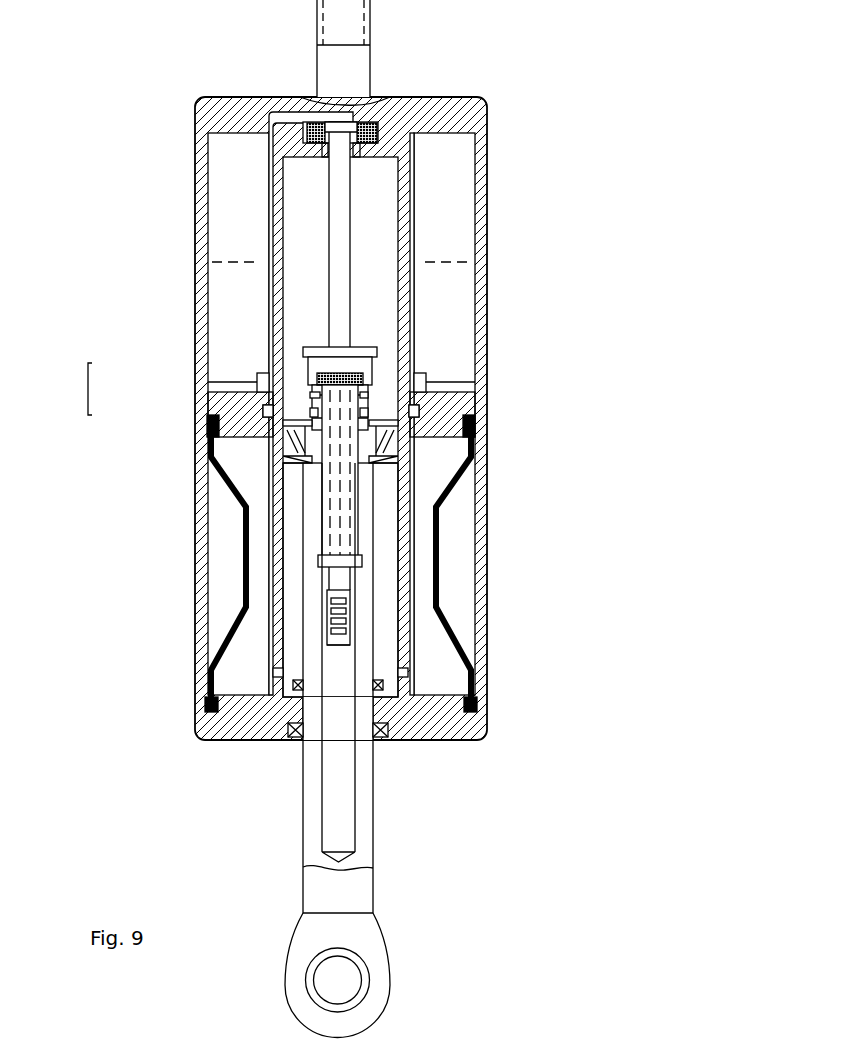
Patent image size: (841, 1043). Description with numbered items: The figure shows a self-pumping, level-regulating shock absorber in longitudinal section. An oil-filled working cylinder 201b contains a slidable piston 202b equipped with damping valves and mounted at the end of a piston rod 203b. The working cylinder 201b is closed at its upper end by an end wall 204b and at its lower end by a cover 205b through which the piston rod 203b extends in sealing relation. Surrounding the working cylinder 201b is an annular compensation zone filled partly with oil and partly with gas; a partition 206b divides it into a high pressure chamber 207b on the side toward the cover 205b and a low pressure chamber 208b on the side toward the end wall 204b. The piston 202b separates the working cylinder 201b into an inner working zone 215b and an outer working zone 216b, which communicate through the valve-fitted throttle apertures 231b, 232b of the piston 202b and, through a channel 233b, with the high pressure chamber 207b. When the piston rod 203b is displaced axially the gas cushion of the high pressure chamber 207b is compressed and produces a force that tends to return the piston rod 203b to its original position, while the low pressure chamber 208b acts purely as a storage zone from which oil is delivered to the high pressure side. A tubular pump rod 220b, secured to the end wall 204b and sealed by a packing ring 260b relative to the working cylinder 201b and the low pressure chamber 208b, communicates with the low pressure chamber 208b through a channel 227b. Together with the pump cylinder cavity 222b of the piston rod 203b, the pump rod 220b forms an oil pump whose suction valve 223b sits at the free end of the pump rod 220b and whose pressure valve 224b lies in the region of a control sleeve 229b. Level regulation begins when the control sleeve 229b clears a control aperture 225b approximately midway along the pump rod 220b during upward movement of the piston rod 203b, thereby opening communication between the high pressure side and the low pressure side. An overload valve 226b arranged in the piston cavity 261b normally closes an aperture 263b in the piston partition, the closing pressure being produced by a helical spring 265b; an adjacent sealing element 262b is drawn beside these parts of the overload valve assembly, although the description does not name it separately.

The working cylinder 201b is at (268, 342).
The piston 202b is at (298, 462).
The piston rod 203b is at (312, 800).
The end wall 204b is at (430, 112).
The cover 205b is at (413, 737).
The partition 206b is at (438, 417).
The high pressure chamber 207b is at (258, 618).
The low pressure chamber 208b is at (228, 290).
The inner working zone 215b is at (372, 243).
The outer working zone 216b is at (384, 525).
The pump rod 220b is at (350, 285).
The pump cylinder cavity 222b is at (340, 660).
The suction valve 223b is at (353, 608).
The pressure valve 224b is at (352, 382).
The control aperture 225b is at (356, 350).
The overload valve 226b is at (67, 389).
The channel 227b is at (300, 115).
The control sleeve 229b is at (338, 492).
The throttle aperture 231b is at (390, 444).
The throttle aperture 232b is at (286, 446).
The channel 233b is at (268, 673).
The packing ring 260b is at (370, 150).
The piston cavity 261b is at (366, 410).
The seal ring 262b is at (318, 398).
The aperture 263b is at (322, 380).
The helical spring 265b is at (312, 411).